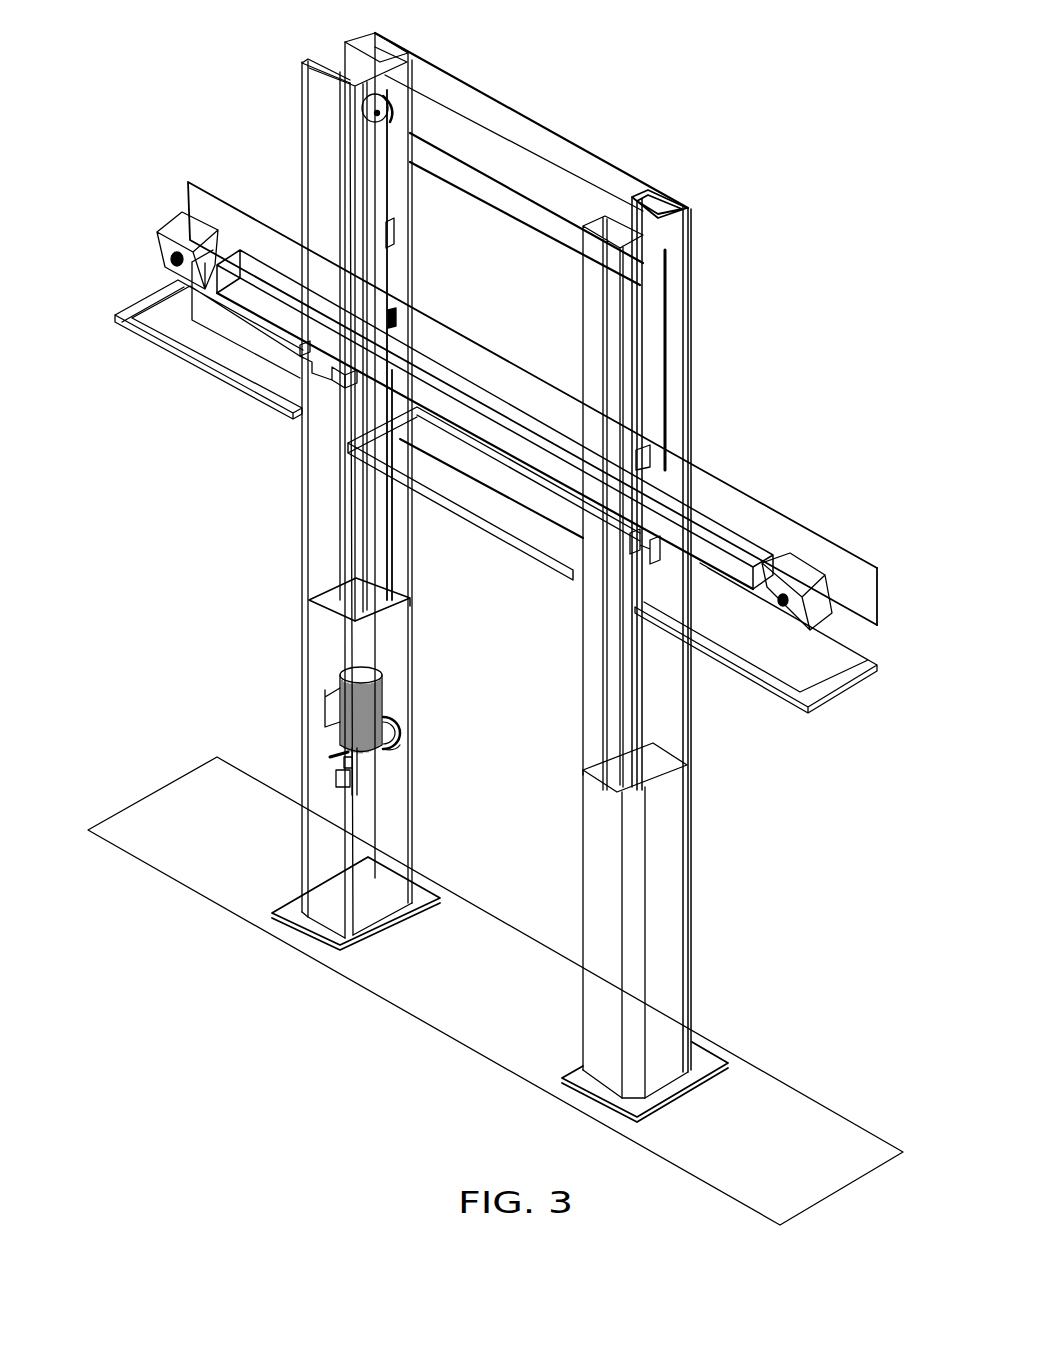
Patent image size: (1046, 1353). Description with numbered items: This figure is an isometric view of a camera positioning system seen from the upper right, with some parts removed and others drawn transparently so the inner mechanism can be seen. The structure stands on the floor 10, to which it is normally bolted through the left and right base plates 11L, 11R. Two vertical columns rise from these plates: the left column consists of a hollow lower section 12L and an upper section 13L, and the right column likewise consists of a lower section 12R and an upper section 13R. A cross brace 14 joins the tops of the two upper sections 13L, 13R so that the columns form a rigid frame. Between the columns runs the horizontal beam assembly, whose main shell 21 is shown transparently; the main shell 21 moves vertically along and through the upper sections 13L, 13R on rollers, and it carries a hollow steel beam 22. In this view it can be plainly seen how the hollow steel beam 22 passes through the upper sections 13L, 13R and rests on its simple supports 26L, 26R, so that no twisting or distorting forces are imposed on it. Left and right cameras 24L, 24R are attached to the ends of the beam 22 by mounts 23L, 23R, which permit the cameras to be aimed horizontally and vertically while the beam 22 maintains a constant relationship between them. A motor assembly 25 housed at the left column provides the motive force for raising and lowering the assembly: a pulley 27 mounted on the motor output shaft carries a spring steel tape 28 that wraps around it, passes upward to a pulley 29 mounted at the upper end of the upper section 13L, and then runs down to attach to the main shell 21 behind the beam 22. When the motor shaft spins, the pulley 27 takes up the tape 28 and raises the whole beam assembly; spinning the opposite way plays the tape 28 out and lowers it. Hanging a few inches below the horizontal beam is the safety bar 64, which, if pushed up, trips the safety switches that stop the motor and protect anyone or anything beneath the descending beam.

The floor 10 is at (225, 865).
The left base plate 11L is at (347, 940).
The right base plate 11R is at (633, 1103).
The lower section of left column 12L is at (320, 728).
The lower section of right column 12R is at (582, 952).
The upper section of left column 13L is at (330, 592).
The upper section of right column 13R is at (585, 768).
The cross brace 14 is at (445, 87).
The main shell 21 is at (735, 470).
The hollow steel beam 22 is at (710, 487).
The left camera mount 23L is at (240, 208).
The right camera mount 23R is at (752, 600).
The left camera 24L is at (165, 256).
The right camera 24R is at (800, 620).
The motor assembly 25 is at (375, 698).
The left beam support 26L is at (317, 378).
The right beam support 26R is at (633, 545).
The pulley 27 is at (396, 740).
The spring steel tape 28 is at (395, 200).
The pulley 29 is at (368, 100).
The safety bar 64 is at (224, 383).